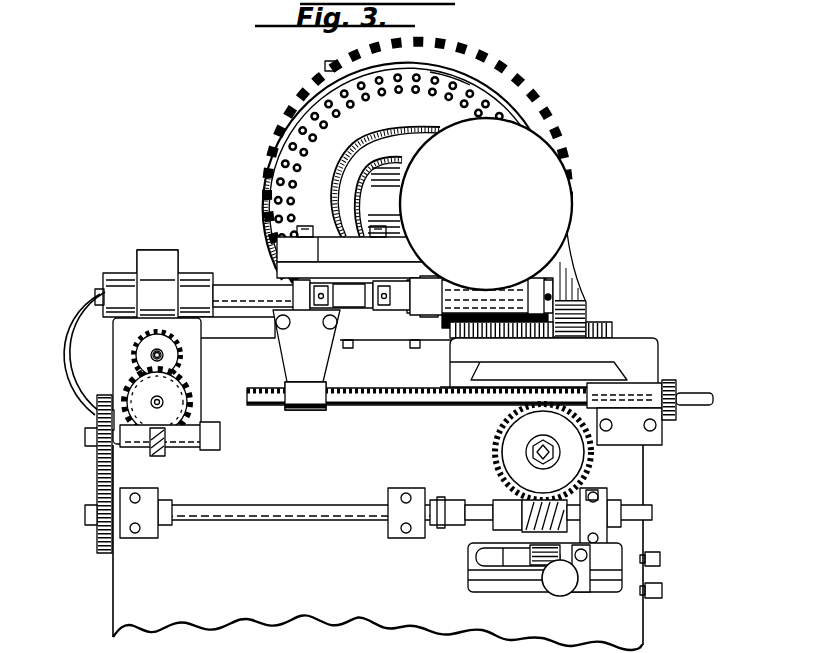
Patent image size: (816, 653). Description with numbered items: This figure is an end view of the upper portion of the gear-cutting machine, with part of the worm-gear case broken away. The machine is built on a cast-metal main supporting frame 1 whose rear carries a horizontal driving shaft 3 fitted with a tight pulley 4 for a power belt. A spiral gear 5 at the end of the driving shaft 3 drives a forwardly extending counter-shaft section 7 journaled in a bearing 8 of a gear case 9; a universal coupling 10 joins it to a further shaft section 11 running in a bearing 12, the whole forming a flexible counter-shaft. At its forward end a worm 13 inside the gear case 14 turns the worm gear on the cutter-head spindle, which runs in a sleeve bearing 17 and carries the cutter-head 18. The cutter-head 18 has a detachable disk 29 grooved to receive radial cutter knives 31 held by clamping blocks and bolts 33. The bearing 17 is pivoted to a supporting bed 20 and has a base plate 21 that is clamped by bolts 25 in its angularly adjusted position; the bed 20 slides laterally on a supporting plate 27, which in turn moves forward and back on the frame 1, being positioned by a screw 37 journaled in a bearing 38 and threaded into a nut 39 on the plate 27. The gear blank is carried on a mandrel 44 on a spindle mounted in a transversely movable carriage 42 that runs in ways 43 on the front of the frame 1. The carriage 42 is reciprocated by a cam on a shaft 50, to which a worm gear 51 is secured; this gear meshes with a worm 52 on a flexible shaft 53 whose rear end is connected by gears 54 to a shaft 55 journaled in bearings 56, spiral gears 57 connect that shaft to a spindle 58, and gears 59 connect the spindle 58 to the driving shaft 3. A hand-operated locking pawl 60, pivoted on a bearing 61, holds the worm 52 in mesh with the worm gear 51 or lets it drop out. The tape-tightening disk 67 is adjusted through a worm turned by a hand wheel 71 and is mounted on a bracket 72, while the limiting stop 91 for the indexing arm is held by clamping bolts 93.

The main supporting frame 1 is at (403, 620).
The driving shaft 3 is at (150, 359).
The tight pulley 4 is at (75, 354).
The spiral gear 5 is at (130, 351).
The counter-shaft section 7 is at (242, 290).
The bearing 8 is at (187, 277).
The gear case 9 is at (153, 262).
The universal coupling 10 is at (368, 304).
The shaft section 11 is at (390, 304).
The bearing 12 is at (578, 598).
The worm 13 is at (597, 508).
The gear case 14 is at (562, 191).
The bearing 17 is at (372, 187).
The cutter-head 18 is at (275, 129).
The supporting bed 20 is at (420, 271).
The base plate 21 is at (404, 254).
The clamping bolt 25 is at (340, 238).
The supporting plate 27 is at (245, 325).
The disk 29 is at (385, 174).
The cutter knife 31 is at (328, 72).
The bolt 33 is at (460, 84).
The screw 37 is at (390, 406).
The bearing 38 is at (654, 412).
The nut 39 is at (305, 411).
The carriage 42 is at (603, 349).
The ways 43 is at (628, 374).
The mandrel 44 is at (565, 258).
The shaft 50 is at (527, 456).
The worm gear 51 is at (497, 436).
The worm 52 is at (522, 506).
The flexible shaft 53 is at (350, 521).
The gears 54 is at (100, 469).
The shaft 55 is at (220, 439).
The bearing 56 is at (169, 431).
The spiral gears 57 is at (157, 455).
The spindle 58 is at (103, 419).
The gears 59 is at (176, 393).
The locking pawl 60 is at (610, 509).
The bearing 61 is at (605, 504).
The disk 67 is at (528, 558).
The hand wheel 71 is at (557, 592).
The bracket 72 is at (588, 581).
The limiting stop 91 is at (662, 593).
The clamping bolt 93 is at (655, 561).